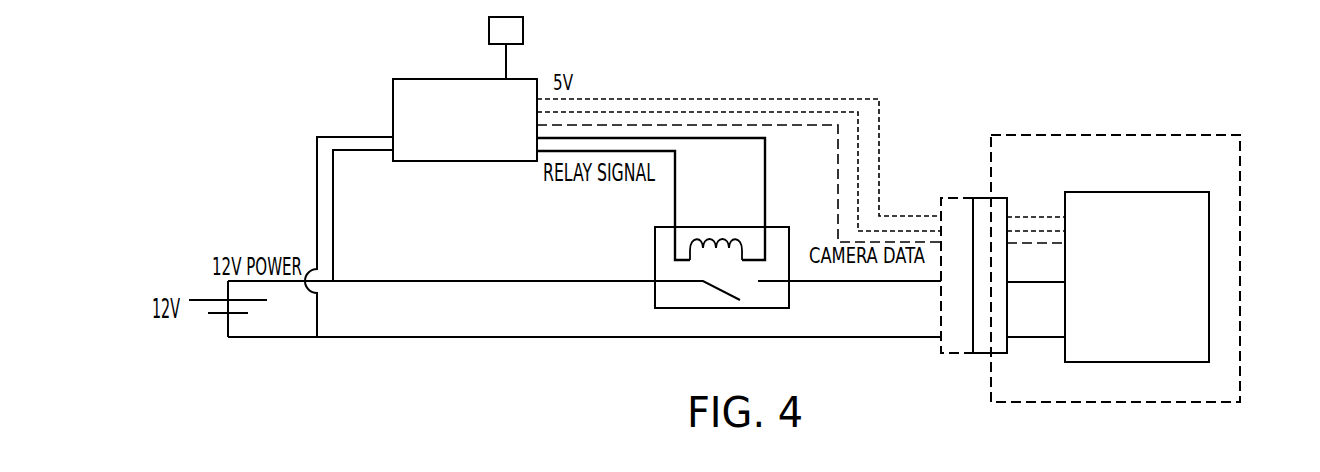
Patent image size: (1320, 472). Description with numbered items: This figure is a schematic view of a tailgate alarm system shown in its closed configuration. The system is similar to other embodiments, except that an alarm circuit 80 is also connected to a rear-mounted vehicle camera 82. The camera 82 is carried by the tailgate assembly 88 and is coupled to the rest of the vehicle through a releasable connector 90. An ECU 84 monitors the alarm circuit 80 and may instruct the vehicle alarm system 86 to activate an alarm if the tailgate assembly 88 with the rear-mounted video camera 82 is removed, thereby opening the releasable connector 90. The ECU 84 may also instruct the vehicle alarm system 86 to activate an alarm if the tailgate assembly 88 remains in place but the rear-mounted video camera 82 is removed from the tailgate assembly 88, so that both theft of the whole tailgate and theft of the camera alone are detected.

The ECU 84 is at (430, 84).
The vehicle alarm system 86 is at (523, 32).
The alarm circuit 80 is at (880, 118).
The releasable connector 90 is at (946, 196).
The rear-mounted vehicle camera 82 is at (1137, 195).
The tailgate assembly 88 is at (1218, 134).